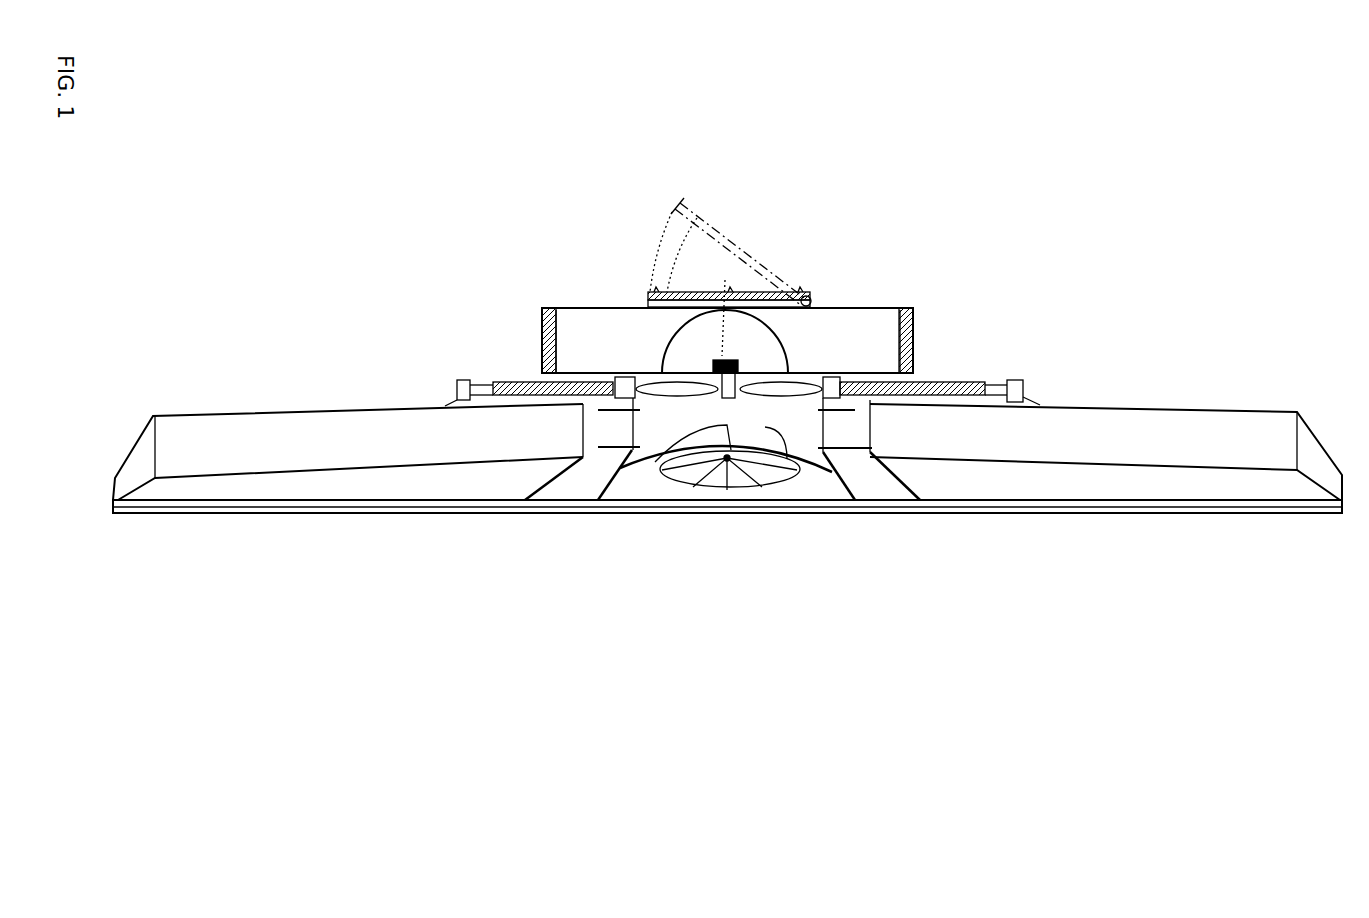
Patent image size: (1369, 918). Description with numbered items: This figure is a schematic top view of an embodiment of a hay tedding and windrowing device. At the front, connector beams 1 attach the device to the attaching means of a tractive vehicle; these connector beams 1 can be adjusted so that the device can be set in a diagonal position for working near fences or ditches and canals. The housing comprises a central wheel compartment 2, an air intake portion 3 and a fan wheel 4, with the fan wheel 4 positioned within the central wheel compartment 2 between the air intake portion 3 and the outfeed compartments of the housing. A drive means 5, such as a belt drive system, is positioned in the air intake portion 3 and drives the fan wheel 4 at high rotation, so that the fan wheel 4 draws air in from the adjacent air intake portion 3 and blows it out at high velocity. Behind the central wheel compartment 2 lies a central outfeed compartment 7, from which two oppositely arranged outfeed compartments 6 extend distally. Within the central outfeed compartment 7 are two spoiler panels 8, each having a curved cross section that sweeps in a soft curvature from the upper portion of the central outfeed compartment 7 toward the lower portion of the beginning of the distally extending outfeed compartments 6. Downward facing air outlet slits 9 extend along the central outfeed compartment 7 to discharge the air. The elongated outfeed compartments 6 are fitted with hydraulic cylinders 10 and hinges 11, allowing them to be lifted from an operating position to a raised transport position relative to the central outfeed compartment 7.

The connector beams 1 is at (730, 238).
The central wheel compartment 2 is at (699, 239).
The air intake portion 3 is at (707, 229).
The fan wheel 4 is at (824, 229).
The drive means 5 is at (782, 238).
The oppositely arranged outfeed compartments 6 is at (727, 569).
The central outfeed compartment 7 is at (771, 511).
The spoiler panels 8 is at (721, 555).
The air outlet slits 9 is at (727, 576).
The hydraulic cylinders 10 is at (705, 278).
The hinges 11 is at (750, 513).